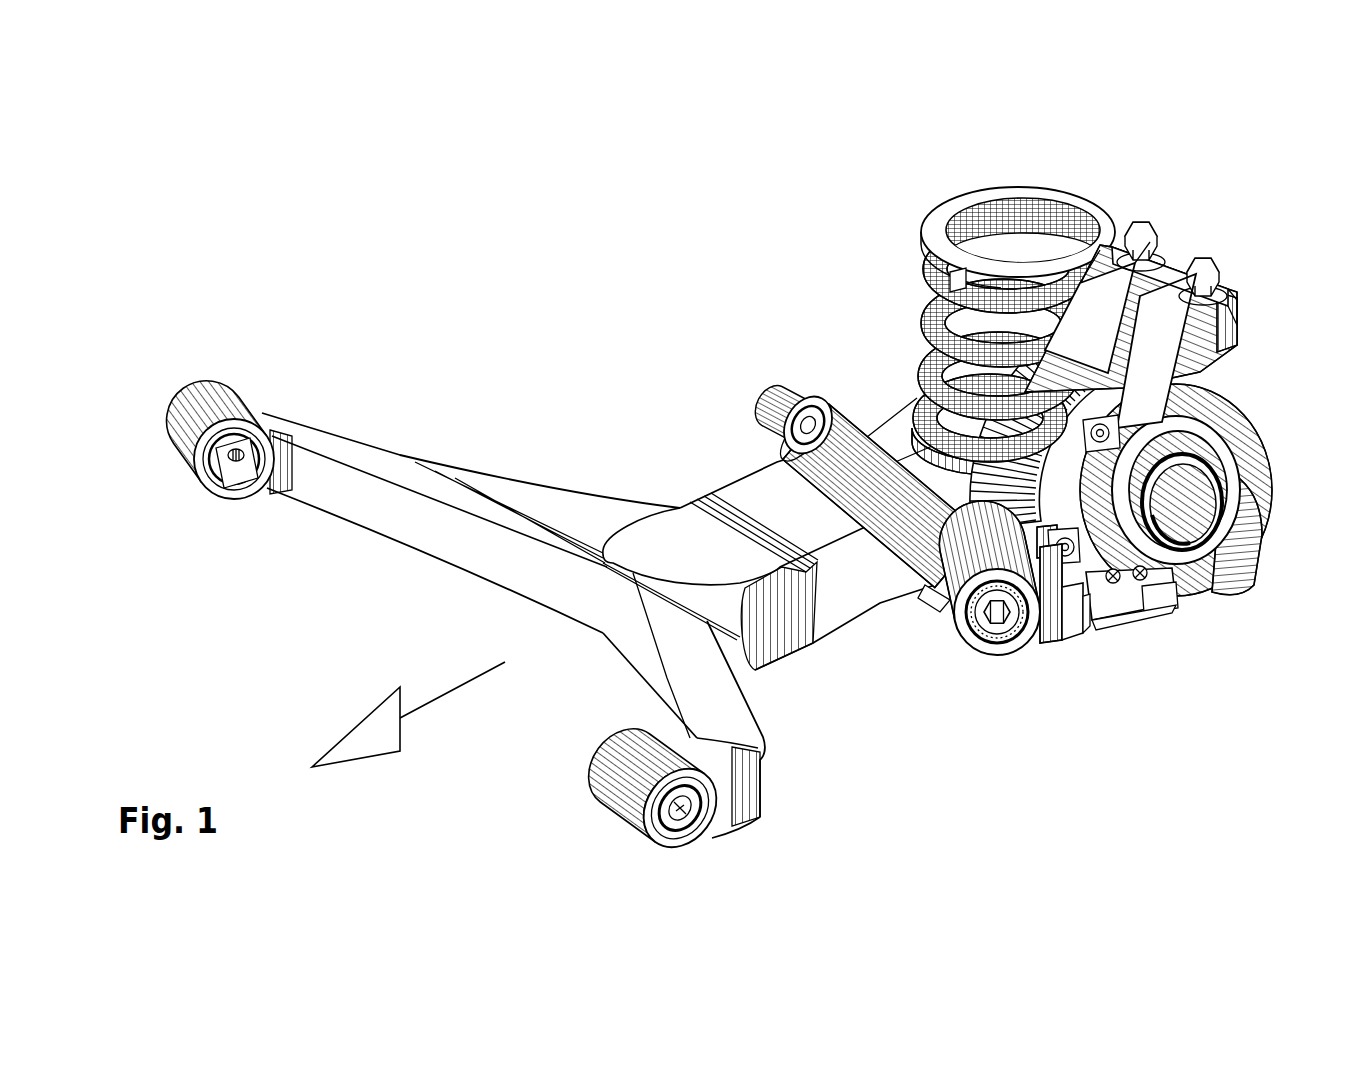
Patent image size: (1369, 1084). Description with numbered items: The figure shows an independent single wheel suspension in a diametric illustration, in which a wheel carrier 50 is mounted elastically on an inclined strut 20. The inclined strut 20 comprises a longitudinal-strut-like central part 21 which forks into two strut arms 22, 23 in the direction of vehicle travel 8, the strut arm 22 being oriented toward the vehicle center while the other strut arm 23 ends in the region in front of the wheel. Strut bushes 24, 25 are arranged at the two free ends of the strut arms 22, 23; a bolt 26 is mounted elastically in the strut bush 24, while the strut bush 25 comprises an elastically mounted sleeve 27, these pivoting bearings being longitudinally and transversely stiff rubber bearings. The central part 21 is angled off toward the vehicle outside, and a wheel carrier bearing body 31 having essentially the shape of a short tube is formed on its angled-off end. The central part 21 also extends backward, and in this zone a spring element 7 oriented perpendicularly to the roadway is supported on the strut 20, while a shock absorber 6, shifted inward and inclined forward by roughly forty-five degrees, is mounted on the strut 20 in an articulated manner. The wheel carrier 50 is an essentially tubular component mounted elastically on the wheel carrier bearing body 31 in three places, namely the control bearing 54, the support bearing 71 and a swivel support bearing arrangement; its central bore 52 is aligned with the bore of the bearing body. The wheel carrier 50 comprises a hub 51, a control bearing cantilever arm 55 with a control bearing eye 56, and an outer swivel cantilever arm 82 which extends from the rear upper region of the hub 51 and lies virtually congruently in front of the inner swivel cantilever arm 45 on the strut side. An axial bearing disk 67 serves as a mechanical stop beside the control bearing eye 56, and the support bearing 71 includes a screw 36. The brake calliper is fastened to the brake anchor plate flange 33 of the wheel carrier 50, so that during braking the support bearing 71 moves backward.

The inclined strut 20 is at (551, 503).
The central part 21 is at (833, 612).
The strut arm 22 is at (382, 505).
The strut arm 23 is at (728, 807).
The strut bush 24 is at (253, 274).
The strut bush 25 is at (616, 842).
The bolt 26 is at (243, 478).
The sleeve 27 is at (672, 812).
The direction of vehicle travel 8 is at (468, 684).
The shock absorber 6 is at (775, 392).
The spring element 7 is at (958, 210).
The wheel carrier bearing body 31 is at (997, 433).
The inner swivel cantilever arm 45 is at (1090, 322).
The outer swivel cantilever arm 82 is at (1157, 355).
The screw 36 is at (956, 728).
The control bearing eye 56 is at (935, 598).
The axial bearing disk 67 is at (997, 643).
The control bearing 54 is at (1010, 655).
The control bearing cantilever arm 55 is at (1060, 615).
The brake anchor plate flange 33 is at (1127, 618).
The wheel carrier 50 is at (1148, 600).
The hub 51 is at (1168, 568).
The central bore 52 is at (1216, 670).
The support bearing 71 is at (1242, 520).